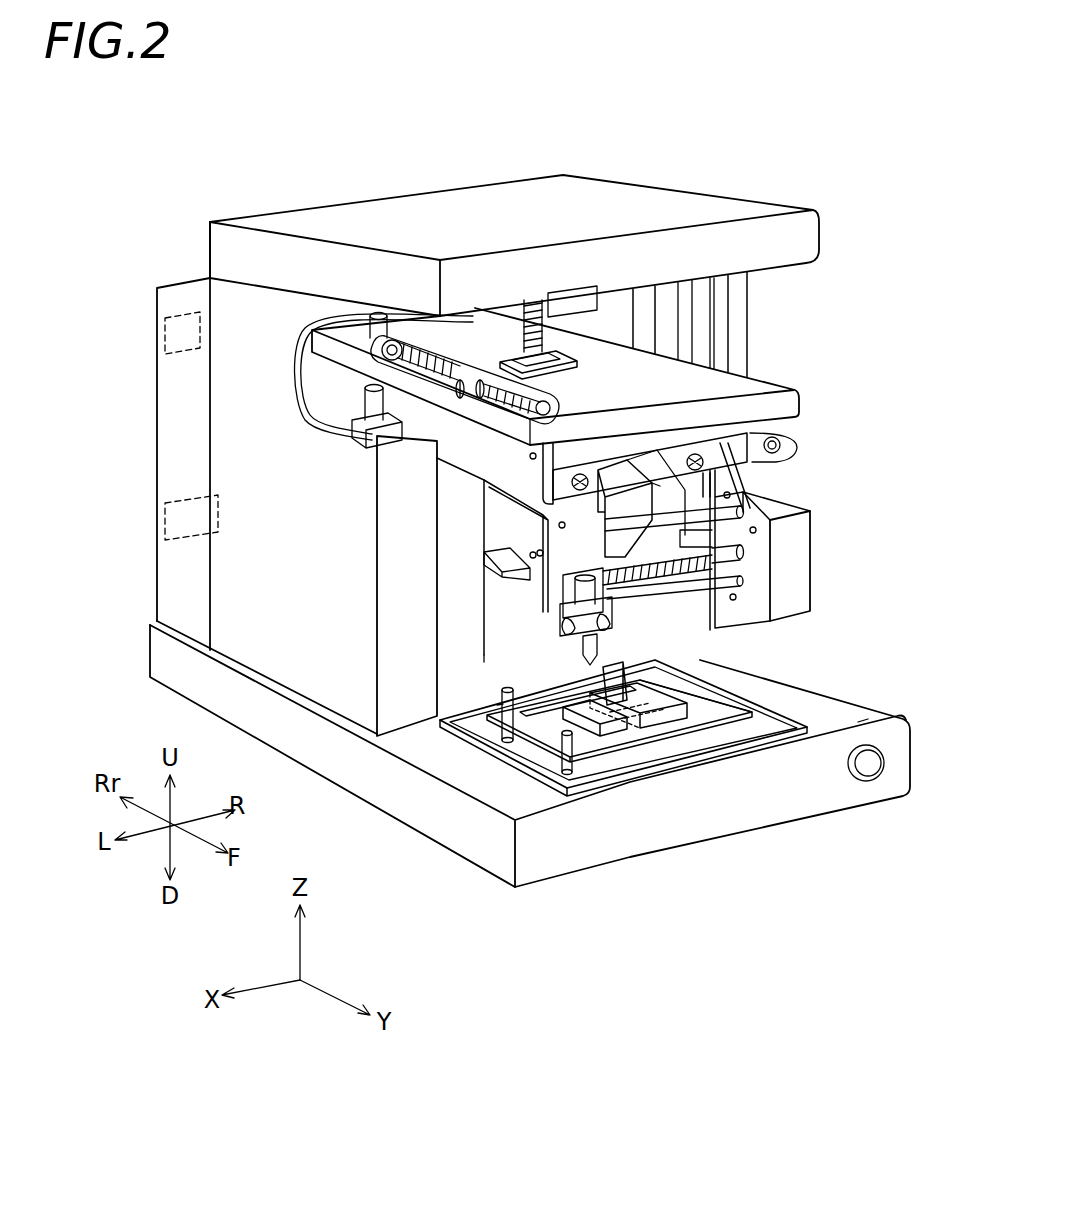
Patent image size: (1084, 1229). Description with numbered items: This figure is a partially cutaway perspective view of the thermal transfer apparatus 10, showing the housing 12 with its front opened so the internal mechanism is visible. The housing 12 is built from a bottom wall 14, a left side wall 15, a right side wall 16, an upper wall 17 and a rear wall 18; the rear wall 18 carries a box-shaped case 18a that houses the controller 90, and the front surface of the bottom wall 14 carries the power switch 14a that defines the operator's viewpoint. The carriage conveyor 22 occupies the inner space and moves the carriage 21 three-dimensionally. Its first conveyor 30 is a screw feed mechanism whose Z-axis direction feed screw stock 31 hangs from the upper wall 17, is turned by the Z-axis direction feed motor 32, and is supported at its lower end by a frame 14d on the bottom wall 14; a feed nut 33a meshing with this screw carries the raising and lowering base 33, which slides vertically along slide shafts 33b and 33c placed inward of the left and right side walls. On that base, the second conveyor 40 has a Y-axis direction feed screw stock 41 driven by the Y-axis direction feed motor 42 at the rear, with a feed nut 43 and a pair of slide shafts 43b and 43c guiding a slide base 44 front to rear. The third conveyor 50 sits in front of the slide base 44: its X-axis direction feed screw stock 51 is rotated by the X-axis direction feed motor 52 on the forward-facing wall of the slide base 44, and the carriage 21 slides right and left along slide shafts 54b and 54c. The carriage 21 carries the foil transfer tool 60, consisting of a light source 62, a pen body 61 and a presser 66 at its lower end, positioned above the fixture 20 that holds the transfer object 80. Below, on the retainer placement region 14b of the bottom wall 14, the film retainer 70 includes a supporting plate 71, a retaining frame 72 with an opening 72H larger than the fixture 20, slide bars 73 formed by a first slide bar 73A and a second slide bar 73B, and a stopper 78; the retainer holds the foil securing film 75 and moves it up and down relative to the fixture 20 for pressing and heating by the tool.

The thermal transfer apparatus 10 is at (744, 131).
The housing 12 is at (514, 219).
The bottom wall 14 is at (555, 785).
The power switch 14a is at (870, 770).
The retainer placement region 14b is at (860, 722).
The frame 14d is at (457, 637).
The left side wall 15 is at (310, 657).
The right side wall 16 is at (738, 278).
The upper wall 17 is at (430, 215).
The rear wall 18 is at (216, 525).
The case 18a is at (160, 308).
The fixture 20 is at (582, 690).
The carriage 21 is at (566, 667).
The carriage conveyor 22 is at (644, 540).
The first conveyor 30 is at (572, 292).
The Z-axis direction feed screw stock 31 is at (546, 300).
The Z-axis direction feed motor 32 is at (577, 300).
The raising and lowering base 33 is at (752, 388).
The feed nut 33a is at (556, 340).
The slide shaft 33b is at (370, 405).
The slide shaft 33c is at (690, 313).
The second conveyor 40 is at (412, 346).
The Y-axis direction feed screw stock 41 is at (546, 400).
The Y-axis direction feed motor 42 is at (340, 318).
The feed nut 43 is at (490, 342).
The slide shaft 43b is at (540, 466).
The slide shaft 43c is at (746, 456).
The slide base 44 is at (466, 520).
The third conveyor 50 is at (747, 565).
The X-axis direction feed screw stock 51 is at (748, 570).
The X-axis direction feed motor 52 is at (800, 521).
The slide shaft 54b is at (724, 538).
The slide shaft 54c is at (702, 630).
The foil transfer tool 60 is at (538, 607).
The pen body 61 is at (560, 607).
The light source 62 is at (166, 515).
The presser 66 is at (612, 642).
The film retainer 70 is at (623, 780).
The supporting plate 71 is at (806, 728).
The retaining frame 72 is at (668, 779).
The opening 72H is at (725, 705).
The slide bars 73 is at (497, 817).
The first slide bar 73A is at (502, 712).
The second slide bar 73B is at (516, 750).
The foil securing film 75 is at (495, 707).
The stopper 78 is at (700, 700).
The transfer object 80 is at (672, 735).
The controller 90 is at (166, 345).